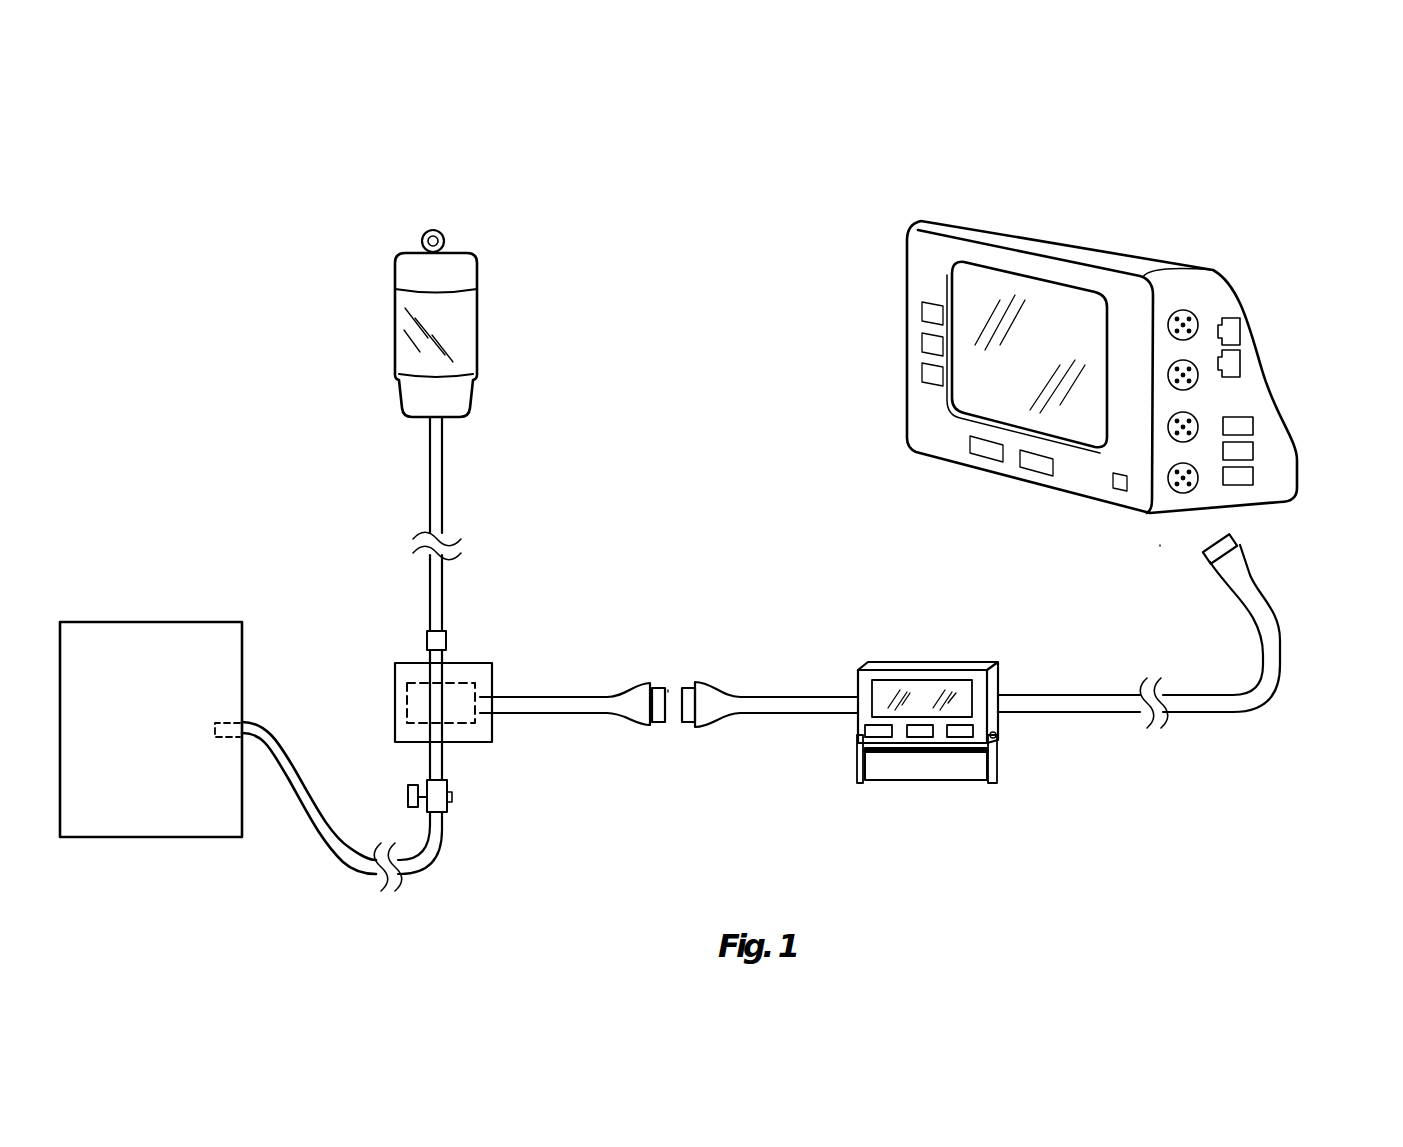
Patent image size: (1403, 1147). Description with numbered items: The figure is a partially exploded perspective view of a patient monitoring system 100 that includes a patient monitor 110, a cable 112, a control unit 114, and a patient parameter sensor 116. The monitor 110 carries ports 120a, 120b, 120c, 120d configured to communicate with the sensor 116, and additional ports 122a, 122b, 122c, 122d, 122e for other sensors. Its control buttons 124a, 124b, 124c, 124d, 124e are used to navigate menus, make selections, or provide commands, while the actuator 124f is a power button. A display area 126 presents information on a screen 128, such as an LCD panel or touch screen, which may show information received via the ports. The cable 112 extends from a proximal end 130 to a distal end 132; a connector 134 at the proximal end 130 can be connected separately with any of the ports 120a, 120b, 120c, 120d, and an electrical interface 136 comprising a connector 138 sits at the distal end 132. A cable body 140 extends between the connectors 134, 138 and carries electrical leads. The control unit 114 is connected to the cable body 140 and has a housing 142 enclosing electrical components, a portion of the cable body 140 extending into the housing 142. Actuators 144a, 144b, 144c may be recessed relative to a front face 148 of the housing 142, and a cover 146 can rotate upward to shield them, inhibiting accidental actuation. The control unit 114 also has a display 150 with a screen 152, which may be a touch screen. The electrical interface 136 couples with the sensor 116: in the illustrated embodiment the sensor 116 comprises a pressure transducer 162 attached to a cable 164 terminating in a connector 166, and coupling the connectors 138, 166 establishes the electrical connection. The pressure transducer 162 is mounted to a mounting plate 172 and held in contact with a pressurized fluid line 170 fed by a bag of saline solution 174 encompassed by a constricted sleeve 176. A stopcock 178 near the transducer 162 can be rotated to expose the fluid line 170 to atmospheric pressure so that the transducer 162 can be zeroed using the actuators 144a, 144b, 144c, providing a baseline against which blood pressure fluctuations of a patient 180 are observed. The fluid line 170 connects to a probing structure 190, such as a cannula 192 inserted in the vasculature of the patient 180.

The patient monitoring system 100 is at (576, 168).
The patient monitor 110 is at (1084, 178).
The cable 112 is at (1248, 746).
The control unit 114 is at (886, 624).
The patient parameter sensor 116 is at (401, 643).
The port 120a is at (1183, 310).
The port 120b is at (1192, 362).
The port 120c is at (1193, 415).
The port 120d is at (1198, 483).
The additional port 122a is at (1238, 333).
The additional port 122b is at (1238, 363).
The additional port 122c is at (1255, 425).
The additional port 122d is at (1255, 450).
The additional port 122e is at (1255, 477).
The control button 124a is at (922, 312).
The control button 124b is at (922, 344).
The control button 124c is at (922, 374).
The control button 124d is at (983, 459).
The control button 124e is at (1040, 468).
The power button 124f is at (1117, 490).
The display area 126 is at (975, 285).
The screen 128 is at (1003, 280).
The proximal end 130 is at (1168, 542).
The distal end 132 is at (681, 643).
The connector 134 is at (1238, 543).
The electrical interface 136 is at (709, 742).
The connector 138 is at (690, 725).
The cable body 140 is at (1107, 700).
The housing 142 is at (993, 678).
The actuator 144a is at (880, 737).
The actuator 144b is at (920, 737).
The actuator 144c is at (960, 737).
The cover 146 is at (877, 770).
The front face 148 is at (923, 677).
The display 150 is at (879, 677).
The screen 152 is at (958, 710).
The pressure transducer 162 is at (460, 682).
The cable 164 is at (528, 703).
The connector 166 is at (653, 725).
The pressurized fluid line 170 is at (438, 470).
The mounting plate 172 is at (402, 672).
The bag of saline solution 174 is at (405, 270).
The constricted sleeve 176 is at (403, 350).
The stopcock 178 is at (407, 797).
The patient 180 is at (151, 729).
The probing structure 190 is at (233, 750).
The cannula 192 is at (222, 723).